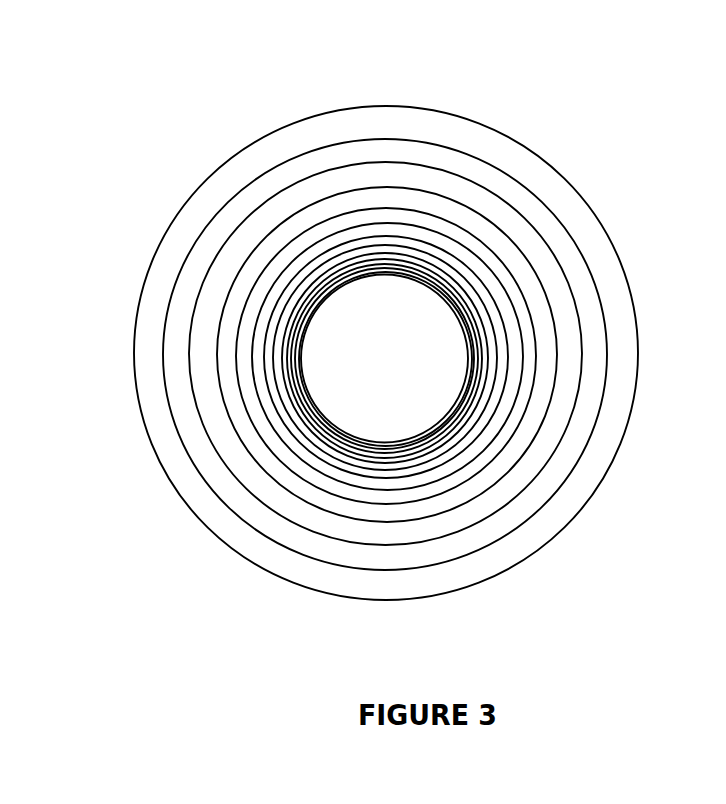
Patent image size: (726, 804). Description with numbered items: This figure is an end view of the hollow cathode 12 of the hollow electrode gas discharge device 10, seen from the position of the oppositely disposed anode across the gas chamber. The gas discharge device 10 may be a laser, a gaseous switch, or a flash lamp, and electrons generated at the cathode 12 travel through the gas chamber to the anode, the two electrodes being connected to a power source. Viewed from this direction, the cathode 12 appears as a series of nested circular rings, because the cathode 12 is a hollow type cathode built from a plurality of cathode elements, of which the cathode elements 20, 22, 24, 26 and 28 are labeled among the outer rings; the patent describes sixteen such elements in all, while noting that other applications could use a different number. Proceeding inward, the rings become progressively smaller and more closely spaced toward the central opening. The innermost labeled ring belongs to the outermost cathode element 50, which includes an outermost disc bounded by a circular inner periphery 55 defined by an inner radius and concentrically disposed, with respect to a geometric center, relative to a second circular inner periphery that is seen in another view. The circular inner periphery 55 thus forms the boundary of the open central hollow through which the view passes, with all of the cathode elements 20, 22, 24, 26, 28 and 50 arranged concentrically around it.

The hollow electrode gas discharge device 10 is at (405, 60).
The cathode 12 is at (221, 148).
The cathode element 20 is at (492, 560).
The cathode element 22 is at (527, 505).
The cathode element 24 is at (560, 437).
The cathode element 26 is at (544, 393).
The cathode element 28 is at (530, 353).
The outermost cathode element 50 is at (393, 274).
The circular inner periphery 55 is at (462, 317).